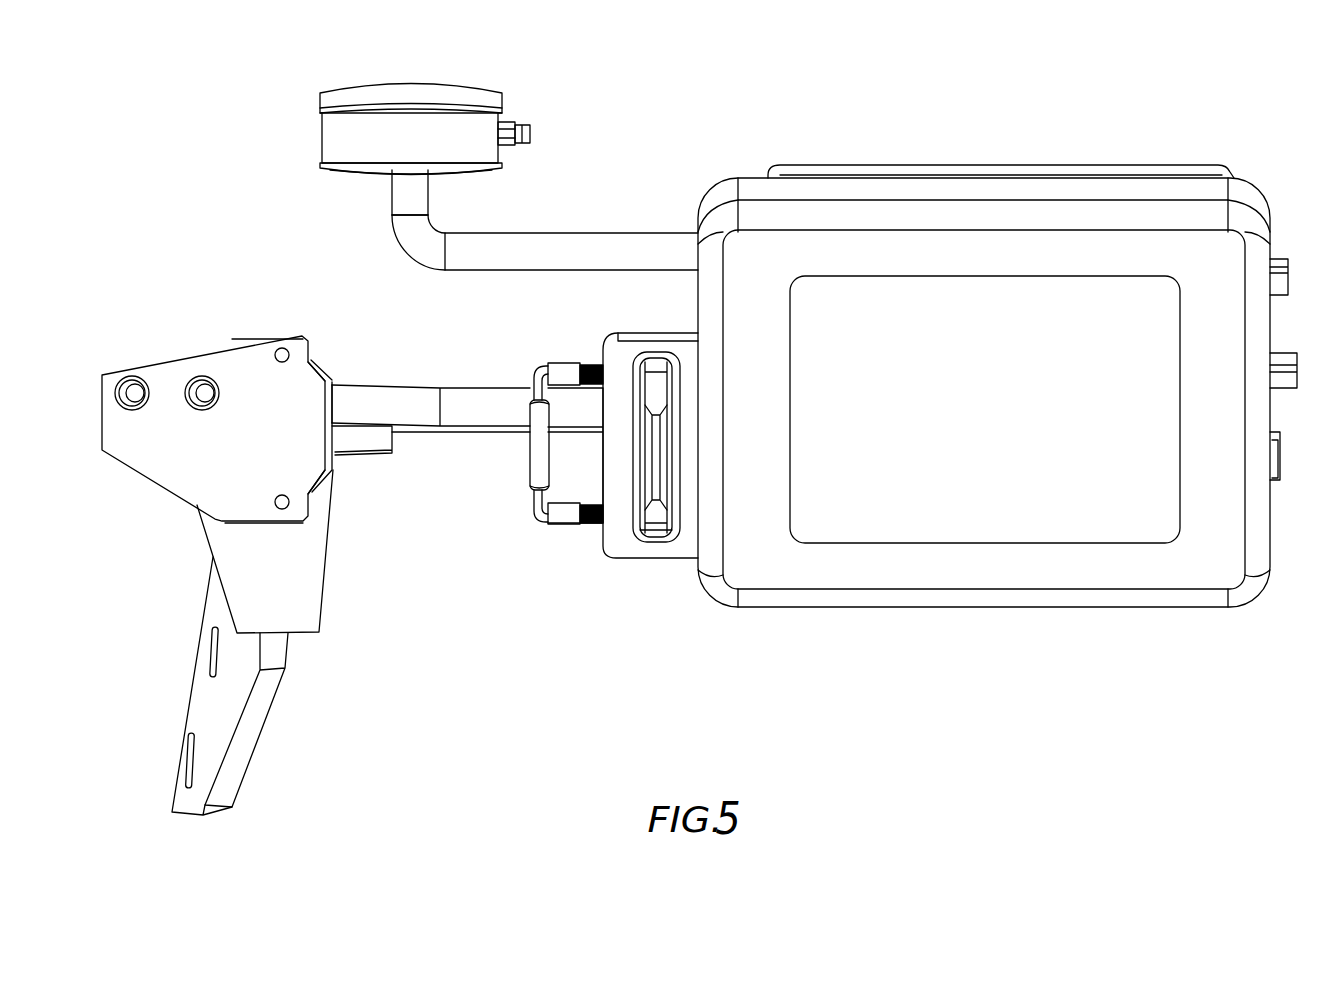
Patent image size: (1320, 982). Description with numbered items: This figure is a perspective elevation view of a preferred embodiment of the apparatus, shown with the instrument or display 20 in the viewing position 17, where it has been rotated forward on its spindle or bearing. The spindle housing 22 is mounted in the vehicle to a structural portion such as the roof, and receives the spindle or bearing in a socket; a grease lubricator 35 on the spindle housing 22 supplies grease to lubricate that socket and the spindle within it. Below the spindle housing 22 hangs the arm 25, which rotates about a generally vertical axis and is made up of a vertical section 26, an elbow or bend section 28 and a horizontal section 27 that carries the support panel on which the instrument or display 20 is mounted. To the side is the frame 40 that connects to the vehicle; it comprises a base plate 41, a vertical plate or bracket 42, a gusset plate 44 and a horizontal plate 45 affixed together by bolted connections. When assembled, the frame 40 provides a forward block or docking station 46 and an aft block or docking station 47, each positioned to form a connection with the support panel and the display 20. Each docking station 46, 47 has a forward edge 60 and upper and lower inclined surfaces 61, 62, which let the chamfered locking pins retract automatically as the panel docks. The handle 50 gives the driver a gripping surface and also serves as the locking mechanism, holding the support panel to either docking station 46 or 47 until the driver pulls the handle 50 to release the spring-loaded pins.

The viewing position 17 is at (822, 656).
The instrument or display 20 is at (625, 333).
The spindle housing 22 is at (336, 90).
The arm 25 is at (648, 232).
The vertical section 26 is at (413, 190).
The horizontal section 27 is at (522, 250).
The elbow or bend section 28 is at (405, 246).
The grease lubricator 35 is at (530, 125).
The frame 40 is at (425, 386).
The base plate 41 is at (352, 388).
The vertical plate or bracket 42 is at (246, 725).
The gusset plate 44 is at (305, 610).
The horizontal plate 45 is at (368, 438).
The forward block or docking station 46 is at (656, 537).
The aft block or docking station 47 is at (227, 345).
The handle 50 is at (530, 470).
The forward edge 60 is at (326, 412).
The upper inclined surface 61 is at (319, 347).
The lower inclined surface 62 is at (320, 490).